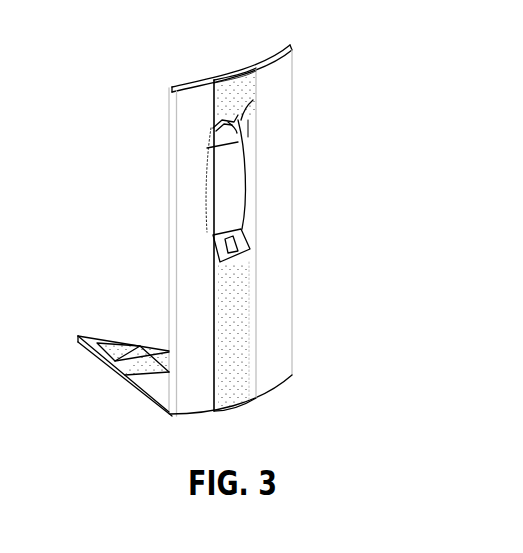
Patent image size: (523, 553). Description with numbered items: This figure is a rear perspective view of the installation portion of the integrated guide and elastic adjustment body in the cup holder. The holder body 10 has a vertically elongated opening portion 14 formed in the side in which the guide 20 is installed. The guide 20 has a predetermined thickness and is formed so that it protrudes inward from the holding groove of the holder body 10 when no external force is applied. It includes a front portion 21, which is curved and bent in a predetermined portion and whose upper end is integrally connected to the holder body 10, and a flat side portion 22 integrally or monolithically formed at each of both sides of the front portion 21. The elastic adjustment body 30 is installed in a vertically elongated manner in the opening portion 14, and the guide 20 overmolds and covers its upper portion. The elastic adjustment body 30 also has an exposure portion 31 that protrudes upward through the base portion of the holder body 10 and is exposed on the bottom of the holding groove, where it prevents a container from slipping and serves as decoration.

The holder body 10 is at (304, 151).
The opening portion 14 is at (250, 333).
The guide 20 is at (304, 166).
The front portion 21 is at (237, 193).
The side portion 22 is at (246, 138).
The elastic adjustment body 30 is at (227, 277).
The exposure portion 31 is at (143, 374).